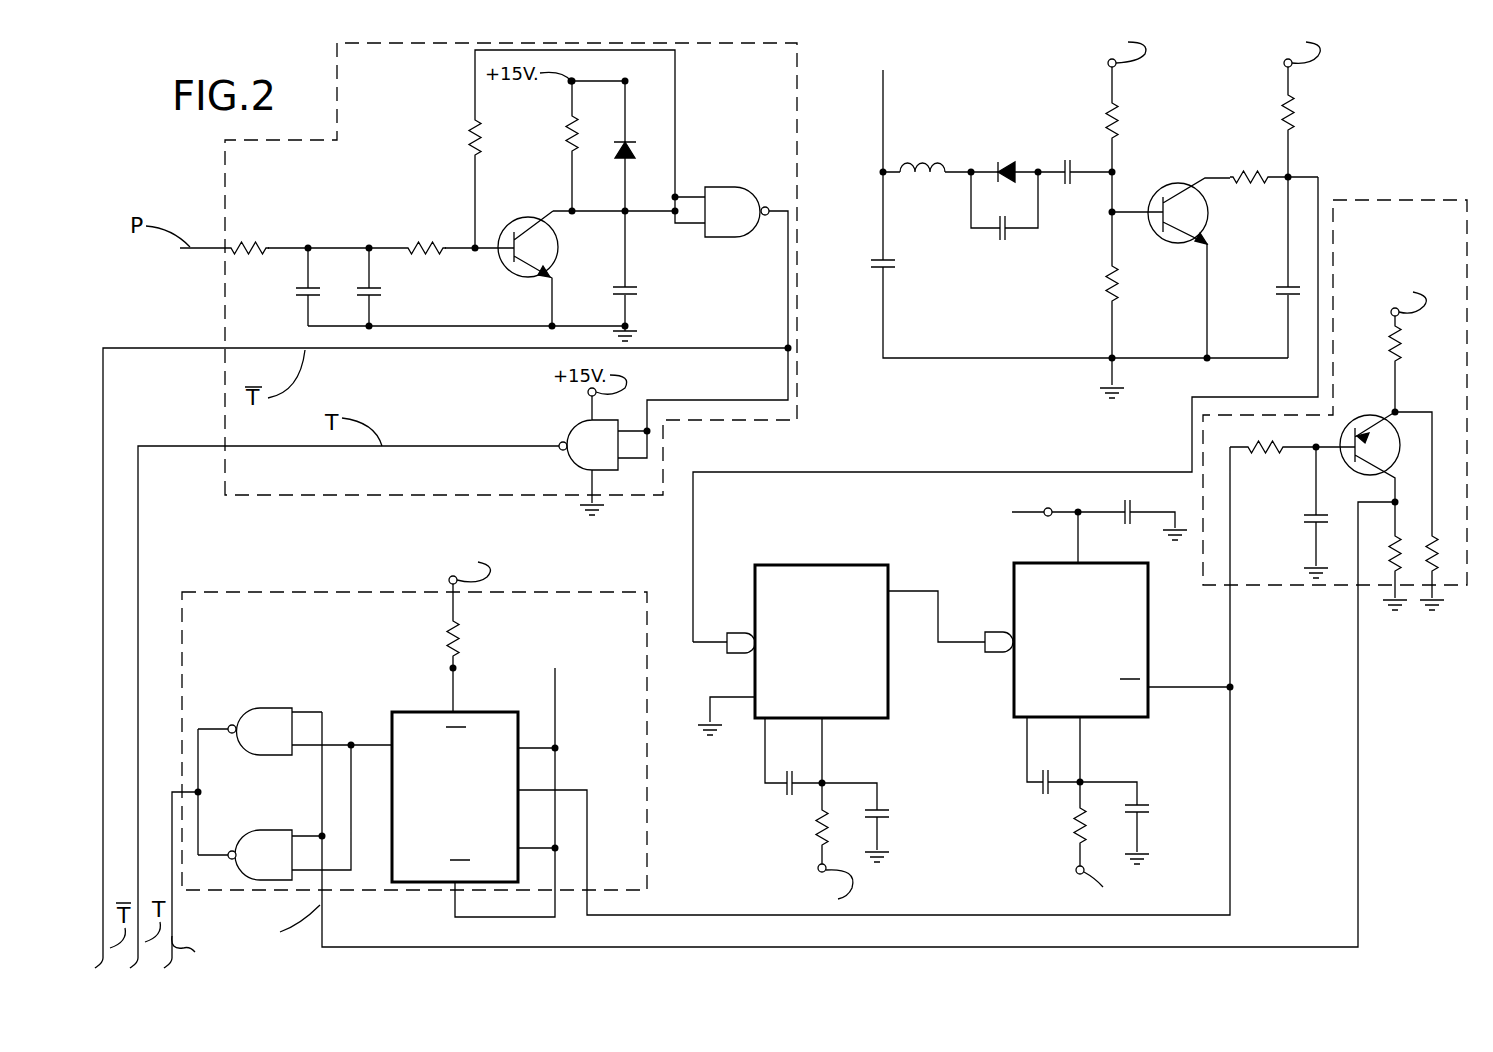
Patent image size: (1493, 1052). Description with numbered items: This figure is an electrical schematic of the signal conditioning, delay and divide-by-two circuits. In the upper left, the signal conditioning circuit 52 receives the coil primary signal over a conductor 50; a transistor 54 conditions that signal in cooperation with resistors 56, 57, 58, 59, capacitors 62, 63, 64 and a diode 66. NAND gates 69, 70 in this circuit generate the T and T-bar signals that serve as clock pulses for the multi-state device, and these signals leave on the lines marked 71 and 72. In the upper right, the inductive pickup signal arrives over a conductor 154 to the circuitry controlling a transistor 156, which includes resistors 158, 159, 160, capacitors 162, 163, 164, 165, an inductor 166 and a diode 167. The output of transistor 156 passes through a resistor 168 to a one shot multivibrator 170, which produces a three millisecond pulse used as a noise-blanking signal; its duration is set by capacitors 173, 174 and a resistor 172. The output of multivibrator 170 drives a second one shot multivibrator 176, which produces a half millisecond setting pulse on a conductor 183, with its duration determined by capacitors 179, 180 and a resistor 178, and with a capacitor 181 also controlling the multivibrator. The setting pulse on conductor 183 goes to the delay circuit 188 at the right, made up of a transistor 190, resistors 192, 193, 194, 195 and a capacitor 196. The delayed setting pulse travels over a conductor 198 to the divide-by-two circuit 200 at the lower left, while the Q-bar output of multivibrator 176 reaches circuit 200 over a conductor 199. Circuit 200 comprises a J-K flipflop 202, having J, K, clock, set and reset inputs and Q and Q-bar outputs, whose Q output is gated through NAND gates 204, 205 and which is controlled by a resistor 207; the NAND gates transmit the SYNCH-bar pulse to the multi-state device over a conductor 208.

The conductor 50 is at (213, 247).
The signal conditioning circuit 52 is at (222, 160).
The transistor 54 is at (520, 215).
The resistor 56 is at (240, 247).
The resistor 57 is at (470, 125).
The resistor 58 is at (425, 247).
The resistor 59 is at (568, 125).
The capacitor 62 is at (300, 300).
The capacitor 63 is at (378, 300).
The capacitor 64 is at (640, 291).
The diode 66 is at (630, 160).
The NAND gate 69 is at (735, 186).
The NAND gate 70 is at (565, 460).
The output line T 71 is at (138, 527).
The output line T-bar 72 is at (103, 408).
The conductor 154 is at (883, 107).
The transistor 156 is at (1174, 183).
The resistor 158 is at (1122, 108).
The resistor 159 is at (1108, 299).
The resistor 160 is at (1296, 108).
The capacitor 162 is at (879, 268).
The capacitor 163 is at (1005, 241).
The capacitor 164 is at (1070, 160).
The capacitor 165 is at (1286, 296).
The inductor 166 is at (919, 163).
The diode 167 is at (1010, 165).
The resistor 168 is at (1253, 191).
The one shot multivibrator 170 is at (805, 565).
The resistor 172 is at (815, 840).
The capacitor 173 is at (780, 795).
The capacitor 174 is at (885, 805).
The one shot multivibrator 176 is at (1025, 563).
The resistor 178 is at (1075, 833).
The capacitor 179 is at (1035, 790).
The capacitor 180 is at (1140, 812).
The capacitor 181 is at (1135, 505).
The conductor 183 is at (1177, 685).
The delay circuit 188 is at (1429, 190).
The transistor 190 is at (1366, 398).
The resistor 192 is at (1252, 456).
The resistor 193 is at (1400, 336).
The resistor 194 is at (1438, 545).
The resistor 195 is at (1390, 555).
The capacitor 196 is at (1308, 522).
The conductor 198 is at (1358, 820).
The conductor 199 is at (572, 790).
The divide-by-two circuit 200 is at (343, 585).
The J-K flipflop 202 is at (410, 712).
The NAND gate 204 is at (258, 706).
The NAND gate 205 is at (262, 828).
The resistor 207 is at (460, 638).
The conductor 208 is at (176, 902).